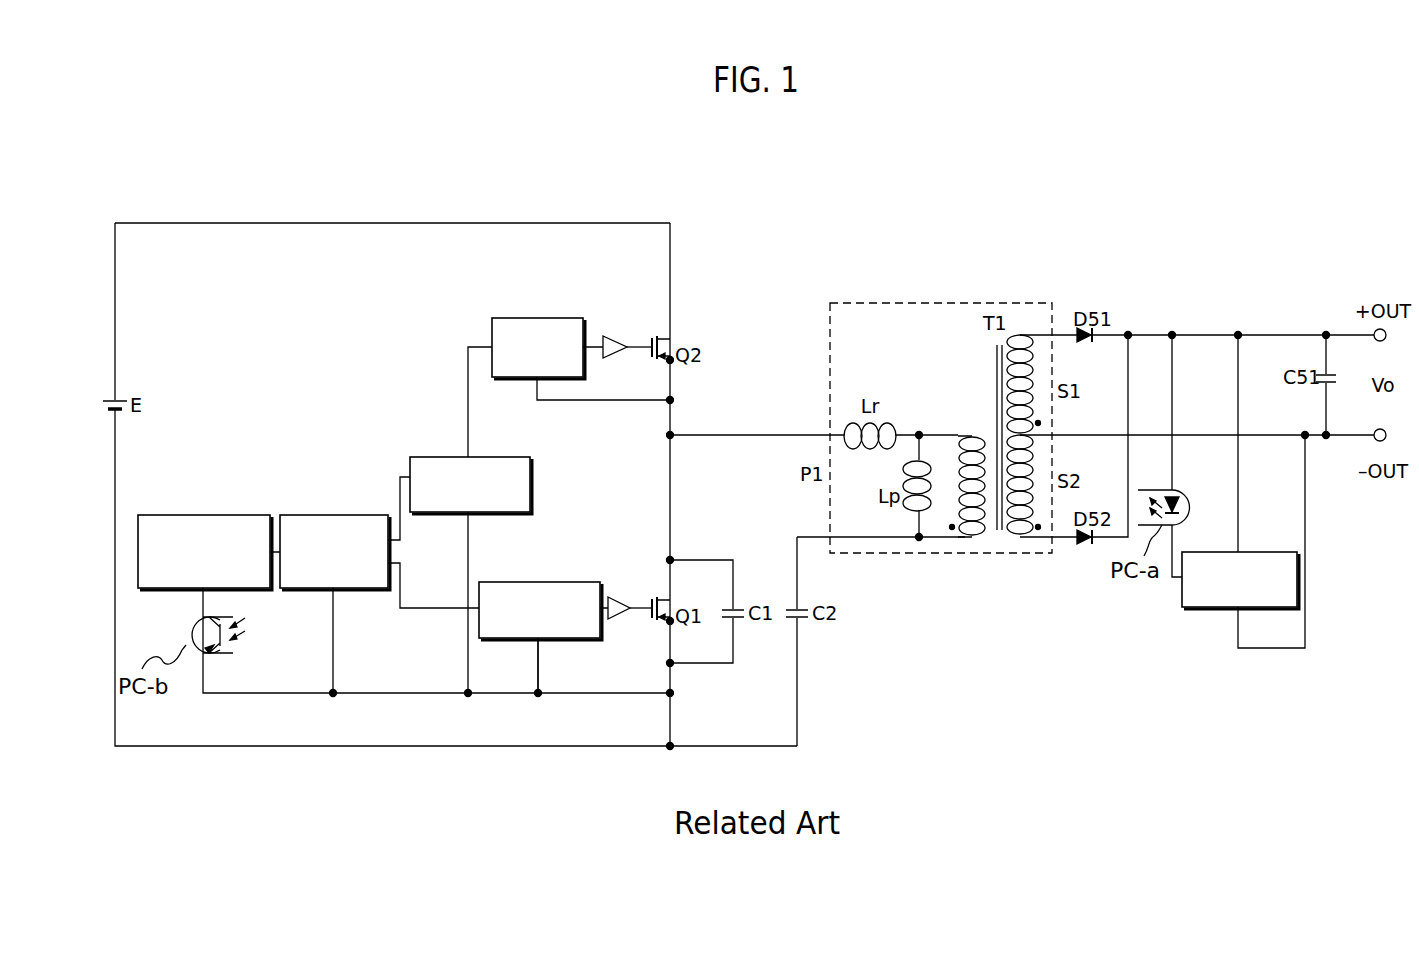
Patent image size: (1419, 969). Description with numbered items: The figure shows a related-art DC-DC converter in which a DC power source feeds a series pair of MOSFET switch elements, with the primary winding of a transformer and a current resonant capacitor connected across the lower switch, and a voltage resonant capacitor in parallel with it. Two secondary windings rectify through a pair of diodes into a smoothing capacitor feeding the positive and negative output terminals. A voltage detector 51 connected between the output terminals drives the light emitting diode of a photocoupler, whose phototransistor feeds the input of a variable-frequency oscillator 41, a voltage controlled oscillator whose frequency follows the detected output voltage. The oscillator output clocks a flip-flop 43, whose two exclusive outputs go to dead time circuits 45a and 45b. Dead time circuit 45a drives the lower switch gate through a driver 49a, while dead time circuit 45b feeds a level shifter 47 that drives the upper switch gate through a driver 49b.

The variable-frequency oscillator 41 is at (212, 515).
The flip-flop 43 is at (331, 515).
The dead time circuit 45a is at (533, 582).
The dead time circuit 45b is at (444, 457).
The level shifter 47 is at (537, 318).
The driver 49a is at (619, 600).
The driver 49b is at (616, 338).
The voltage detector 51 is at (1265, 552).